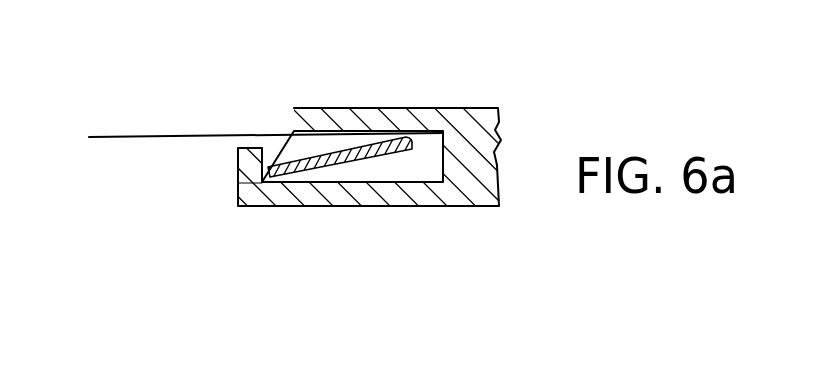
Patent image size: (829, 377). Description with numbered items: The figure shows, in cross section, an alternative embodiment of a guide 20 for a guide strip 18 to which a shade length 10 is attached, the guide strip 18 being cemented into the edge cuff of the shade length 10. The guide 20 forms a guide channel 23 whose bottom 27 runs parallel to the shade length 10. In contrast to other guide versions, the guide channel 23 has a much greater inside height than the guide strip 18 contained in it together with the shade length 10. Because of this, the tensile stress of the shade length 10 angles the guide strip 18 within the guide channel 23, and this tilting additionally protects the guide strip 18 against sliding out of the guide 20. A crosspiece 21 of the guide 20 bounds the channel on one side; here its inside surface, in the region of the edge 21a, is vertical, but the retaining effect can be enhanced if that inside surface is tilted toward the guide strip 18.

The shade length 10 is at (152, 137).
The guide 20 is at (470, 108).
The crosspiece 21 is at (245, 170).
The wall edge 21a is at (273, 162).
The guide channel 23 is at (420, 152).
The guide strip 18 is at (343, 168).
The bottom 27 is at (410, 181).